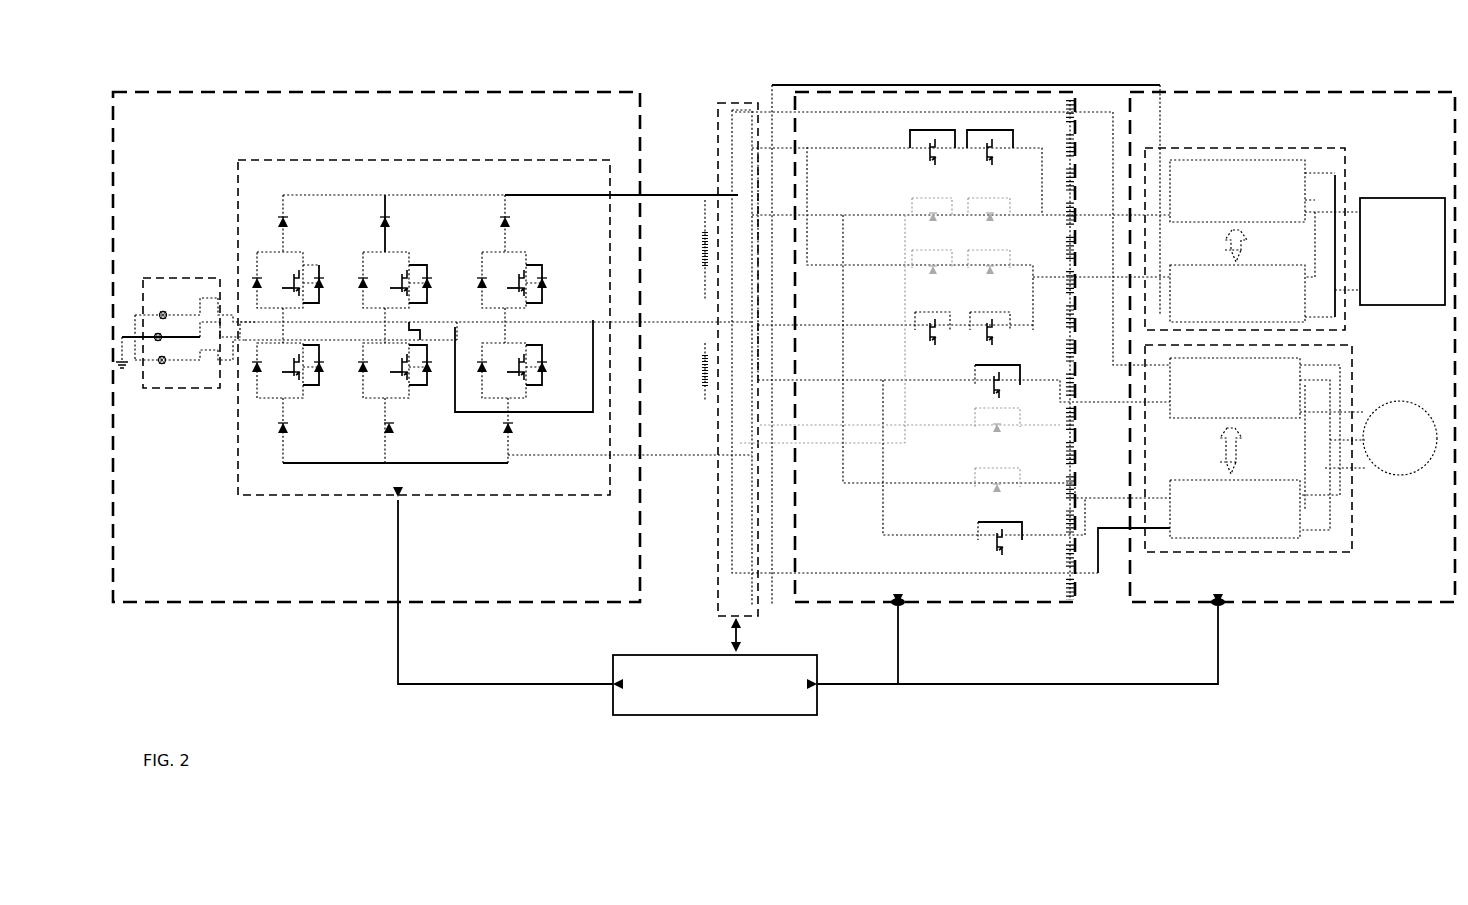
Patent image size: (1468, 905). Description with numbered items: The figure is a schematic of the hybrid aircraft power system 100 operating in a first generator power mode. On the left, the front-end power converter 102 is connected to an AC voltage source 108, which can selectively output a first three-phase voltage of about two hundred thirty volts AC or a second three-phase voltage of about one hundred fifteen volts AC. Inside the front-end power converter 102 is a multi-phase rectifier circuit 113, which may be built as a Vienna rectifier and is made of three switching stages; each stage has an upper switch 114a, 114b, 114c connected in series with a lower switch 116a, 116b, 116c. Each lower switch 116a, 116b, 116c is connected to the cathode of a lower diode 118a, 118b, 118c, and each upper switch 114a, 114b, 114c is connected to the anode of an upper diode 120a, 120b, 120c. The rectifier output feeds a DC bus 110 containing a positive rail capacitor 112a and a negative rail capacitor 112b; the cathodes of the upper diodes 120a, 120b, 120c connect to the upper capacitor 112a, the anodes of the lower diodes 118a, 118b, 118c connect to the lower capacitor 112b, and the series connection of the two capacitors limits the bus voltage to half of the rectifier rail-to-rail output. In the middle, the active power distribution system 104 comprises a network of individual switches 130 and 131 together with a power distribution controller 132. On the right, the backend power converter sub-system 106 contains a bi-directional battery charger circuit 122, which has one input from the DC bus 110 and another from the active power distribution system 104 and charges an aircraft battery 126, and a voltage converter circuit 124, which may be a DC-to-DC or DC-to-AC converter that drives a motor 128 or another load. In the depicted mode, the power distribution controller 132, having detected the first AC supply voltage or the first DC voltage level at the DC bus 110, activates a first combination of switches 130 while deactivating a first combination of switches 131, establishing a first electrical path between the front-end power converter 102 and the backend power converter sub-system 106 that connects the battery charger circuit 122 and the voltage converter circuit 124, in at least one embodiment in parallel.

The hybrid aircraft power system 100 is at (143, 60).
The front-end power converter 102 is at (282, 608).
The active power distribution system 104 is at (984, 608).
The backend power converter sub-system 106 is at (1366, 612).
The AC voltage source 108 is at (165, 395).
The DC bus 110 is at (736, 98).
The positive rail capacitor 112a is at (738, 270).
The negative rail capacitor 112b is at (738, 412).
The multi-phase rectifier circuit 113 is at (268, 156).
The upper switch 114a is at (296, 274).
The upper switch 114b is at (405, 279).
The upper switch 114c is at (522, 282).
The lower switch 116a is at (302, 368).
The lower switch 116b is at (407, 369).
The lower switch 116c is at (522, 364).
The lower diode 118a is at (281, 434).
The lower diode 118b is at (386, 431).
The lower diode 118c is at (514, 430).
The upper diode 120a is at (282, 218).
The upper diode 120b is at (392, 224).
The upper diode 120c is at (512, 222).
The bi-directional battery charger circuit 122 is at (1240, 144).
The voltage converter circuit 124 is at (1293, 556).
The battery 126 is at (1397, 200).
The motor 128 is at (1402, 402).
The switches 130 is at (928, 150).
The switches 131 is at (928, 218).
The power distribution controller 132 is at (630, 654).